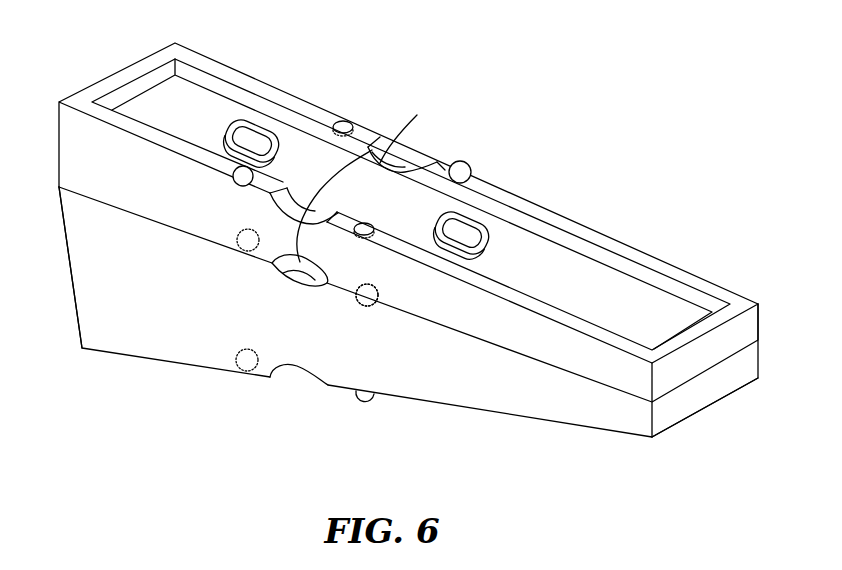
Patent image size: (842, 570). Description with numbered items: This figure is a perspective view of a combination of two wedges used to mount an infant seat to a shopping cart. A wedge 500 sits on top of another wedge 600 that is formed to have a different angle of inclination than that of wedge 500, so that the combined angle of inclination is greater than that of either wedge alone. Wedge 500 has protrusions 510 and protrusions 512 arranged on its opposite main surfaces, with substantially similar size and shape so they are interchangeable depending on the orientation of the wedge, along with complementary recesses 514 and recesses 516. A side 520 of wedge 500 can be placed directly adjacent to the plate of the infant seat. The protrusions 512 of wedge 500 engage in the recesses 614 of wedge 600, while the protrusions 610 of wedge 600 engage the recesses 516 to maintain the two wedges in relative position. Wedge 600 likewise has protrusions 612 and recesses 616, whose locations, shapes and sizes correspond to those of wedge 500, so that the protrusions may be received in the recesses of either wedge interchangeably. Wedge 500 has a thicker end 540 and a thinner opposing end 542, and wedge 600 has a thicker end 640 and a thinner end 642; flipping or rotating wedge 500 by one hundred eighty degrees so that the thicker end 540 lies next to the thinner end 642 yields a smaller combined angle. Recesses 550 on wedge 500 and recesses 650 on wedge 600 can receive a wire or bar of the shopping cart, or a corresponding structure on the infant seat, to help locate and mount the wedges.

The wedge 500 is at (723, 350).
The protrusions 510 is at (236, 172).
The protrusions 512 is at (372, 288).
The recesses 514 is at (343, 122).
The recesses 516 is at (240, 233).
The side 520 is at (550, 258).
The end 540 is at (92, 76).
The end 542 is at (764, 322).
The recesses 550 is at (300, 205).
The wedge 600 is at (458, 395).
The protrusions 610 is at (225, 247).
The protrusions 612 is at (362, 402).
The recesses 614 is at (368, 307).
The recesses 616 is at (245, 367).
The end 640 is at (60, 302).
The end 642 is at (693, 427).
The recesses 650 is at (287, 277).